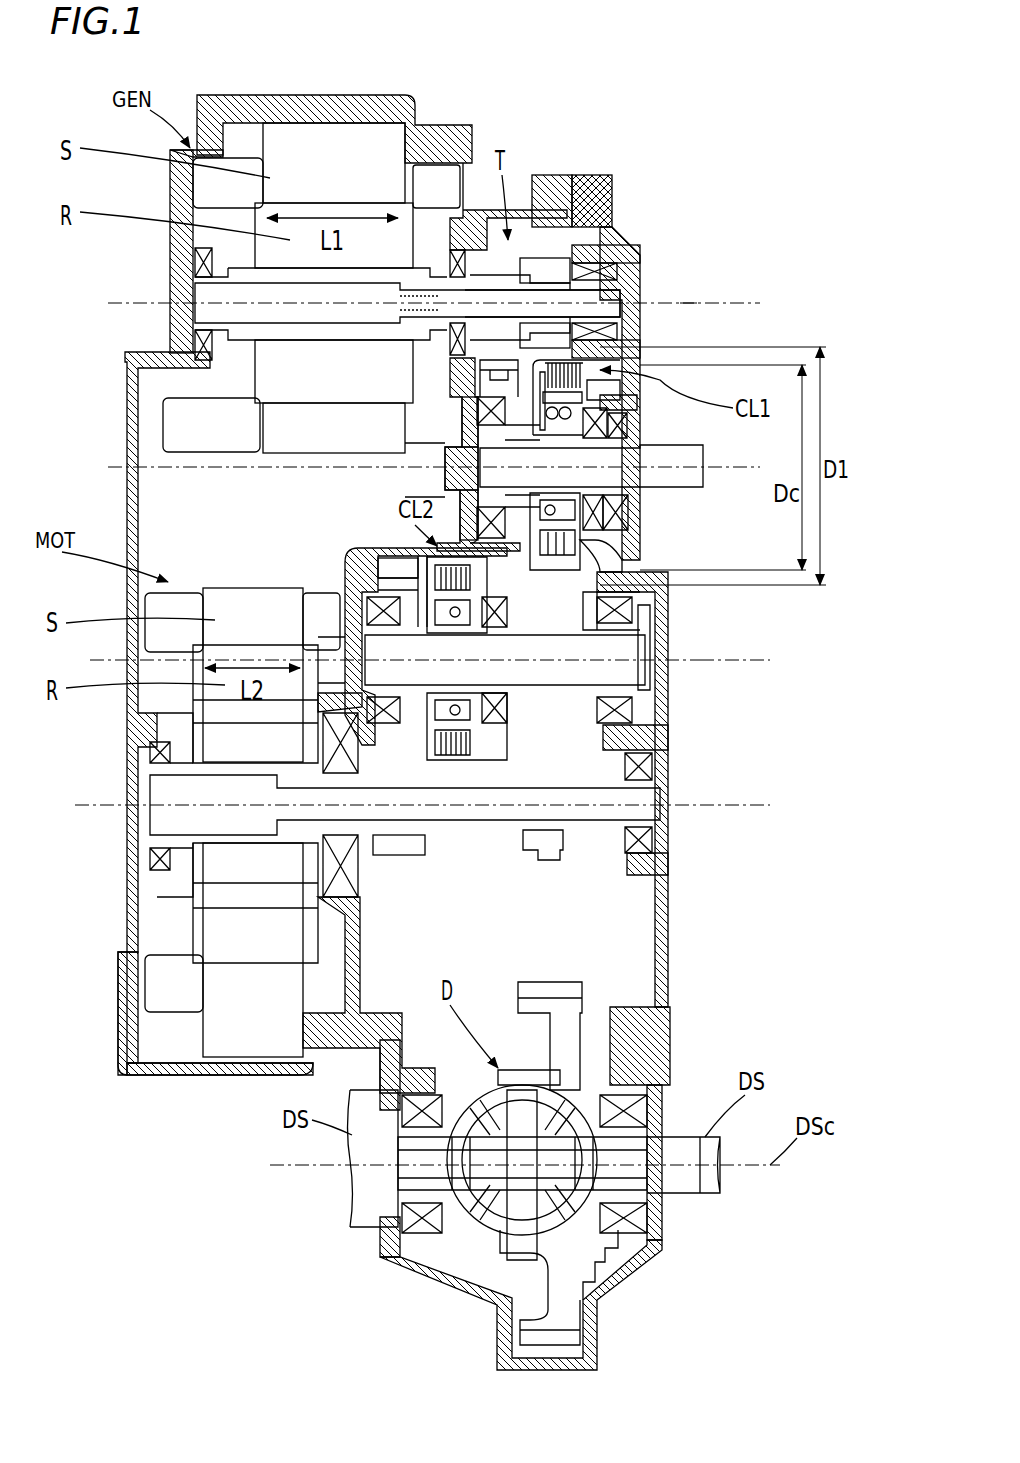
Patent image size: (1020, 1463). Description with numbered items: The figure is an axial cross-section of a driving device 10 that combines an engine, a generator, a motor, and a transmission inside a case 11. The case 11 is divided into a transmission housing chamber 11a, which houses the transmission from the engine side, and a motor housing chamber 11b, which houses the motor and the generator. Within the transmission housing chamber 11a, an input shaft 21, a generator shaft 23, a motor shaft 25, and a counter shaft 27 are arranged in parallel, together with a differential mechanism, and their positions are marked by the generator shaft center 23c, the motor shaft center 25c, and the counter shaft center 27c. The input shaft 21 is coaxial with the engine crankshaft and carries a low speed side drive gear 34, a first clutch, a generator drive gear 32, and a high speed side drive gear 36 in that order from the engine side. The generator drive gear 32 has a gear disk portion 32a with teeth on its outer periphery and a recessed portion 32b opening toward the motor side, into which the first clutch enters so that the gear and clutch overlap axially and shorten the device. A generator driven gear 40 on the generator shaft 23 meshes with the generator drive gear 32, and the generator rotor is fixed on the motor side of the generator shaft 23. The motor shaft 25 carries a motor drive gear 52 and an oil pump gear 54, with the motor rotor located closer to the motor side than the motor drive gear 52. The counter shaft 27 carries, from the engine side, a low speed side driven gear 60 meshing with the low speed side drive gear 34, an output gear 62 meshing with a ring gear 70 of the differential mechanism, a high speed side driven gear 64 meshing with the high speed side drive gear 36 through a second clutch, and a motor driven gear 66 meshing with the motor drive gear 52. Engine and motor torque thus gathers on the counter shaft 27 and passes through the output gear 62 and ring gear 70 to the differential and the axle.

The driving device 10 is at (522, 112).
The case 11 is at (640, 266).
The transmission housing chamber 11a is at (630, 928).
The motor housing chamber 11b is at (165, 490).
The input shaft 21 is at (690, 452).
The generator shaft 23 is at (610, 321).
The generator shaft center 23c is at (700, 303).
The motor shaft 25 is at (660, 832).
The motor shaft center 25c is at (727, 805).
The counter shaft 27 is at (648, 688).
The counter shaft center 27c is at (766, 660).
The generator drive gear 32 is at (612, 358).
The gear disk portion 32a is at (618, 497).
The recessed portion 32b is at (595, 505).
The low speed side drive gear 34 is at (612, 395).
The high speed side drive gear 36 is at (497, 366).
The generator driven gear 40 is at (540, 266).
The motor drive gear 52 is at (403, 850).
The oil pump gear 54 is at (548, 862).
The low speed side driven gear 60 is at (600, 558).
The output gear 62 is at (585, 603).
The high speed side driven gear 64 is at (500, 752).
The motor driven gear 66 is at (385, 558).
The ring gear 70 is at (548, 985).